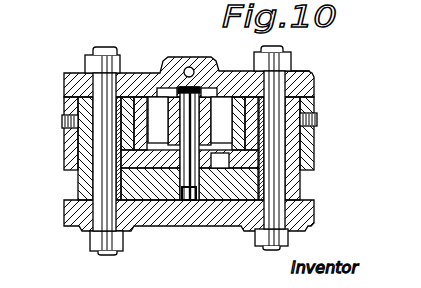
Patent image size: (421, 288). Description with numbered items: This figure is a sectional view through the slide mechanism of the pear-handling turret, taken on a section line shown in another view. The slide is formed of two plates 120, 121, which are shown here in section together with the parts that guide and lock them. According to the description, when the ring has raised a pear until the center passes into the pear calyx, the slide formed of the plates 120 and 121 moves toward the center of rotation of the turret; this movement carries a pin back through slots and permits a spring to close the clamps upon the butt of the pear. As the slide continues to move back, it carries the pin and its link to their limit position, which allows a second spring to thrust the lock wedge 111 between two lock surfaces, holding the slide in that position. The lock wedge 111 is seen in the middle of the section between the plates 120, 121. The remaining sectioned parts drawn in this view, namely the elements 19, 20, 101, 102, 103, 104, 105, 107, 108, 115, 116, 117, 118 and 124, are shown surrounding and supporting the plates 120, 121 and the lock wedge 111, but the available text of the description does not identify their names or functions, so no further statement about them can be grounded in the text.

The top plate 19 is at (316, 82).
The bottom plate 20 is at (312, 214).
The knurled plug 101 is at (318, 125).
The knurled plug 102 is at (65, 128).
The top plate shoulder 103 is at (300, 71).
The clamping bolt 104 is at (98, 111).
The member 105 is at (37, 4).
The right side block 107 is at (303, 184).
The left side block 108 is at (78, 183).
The lock wedge 111 is at (197, 192).
The spacer recess 115 is at (240, 165).
The lower body 116 is at (170, 190).
The bushing 117 is at (213, 180).
The base insert 118 is at (246, 200).
The plate 120 is at (154, 142).
The plate 121 is at (212, 80).
The pin head 124 is at (192, 87).